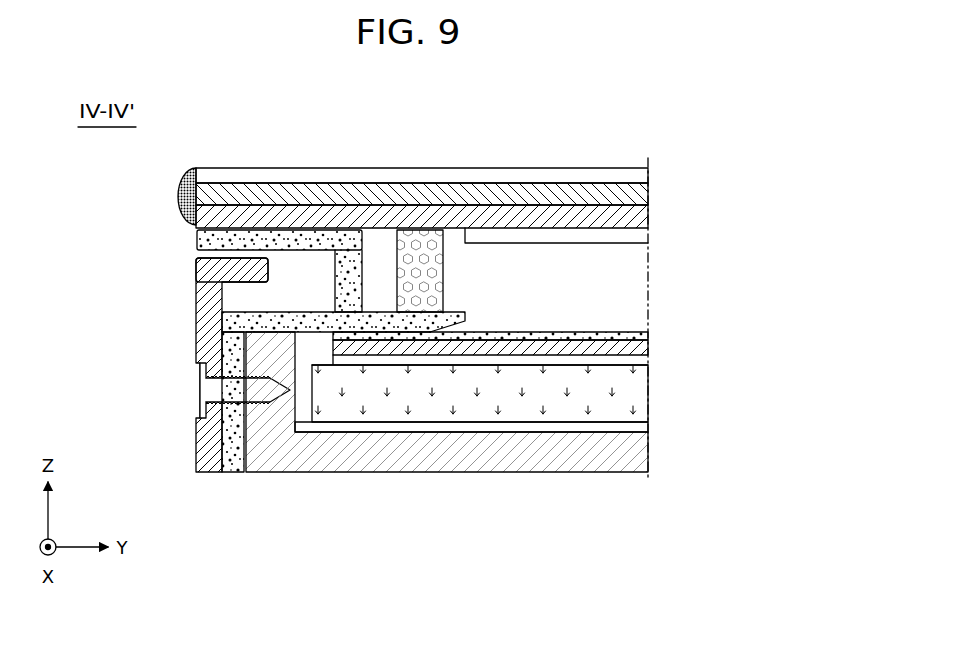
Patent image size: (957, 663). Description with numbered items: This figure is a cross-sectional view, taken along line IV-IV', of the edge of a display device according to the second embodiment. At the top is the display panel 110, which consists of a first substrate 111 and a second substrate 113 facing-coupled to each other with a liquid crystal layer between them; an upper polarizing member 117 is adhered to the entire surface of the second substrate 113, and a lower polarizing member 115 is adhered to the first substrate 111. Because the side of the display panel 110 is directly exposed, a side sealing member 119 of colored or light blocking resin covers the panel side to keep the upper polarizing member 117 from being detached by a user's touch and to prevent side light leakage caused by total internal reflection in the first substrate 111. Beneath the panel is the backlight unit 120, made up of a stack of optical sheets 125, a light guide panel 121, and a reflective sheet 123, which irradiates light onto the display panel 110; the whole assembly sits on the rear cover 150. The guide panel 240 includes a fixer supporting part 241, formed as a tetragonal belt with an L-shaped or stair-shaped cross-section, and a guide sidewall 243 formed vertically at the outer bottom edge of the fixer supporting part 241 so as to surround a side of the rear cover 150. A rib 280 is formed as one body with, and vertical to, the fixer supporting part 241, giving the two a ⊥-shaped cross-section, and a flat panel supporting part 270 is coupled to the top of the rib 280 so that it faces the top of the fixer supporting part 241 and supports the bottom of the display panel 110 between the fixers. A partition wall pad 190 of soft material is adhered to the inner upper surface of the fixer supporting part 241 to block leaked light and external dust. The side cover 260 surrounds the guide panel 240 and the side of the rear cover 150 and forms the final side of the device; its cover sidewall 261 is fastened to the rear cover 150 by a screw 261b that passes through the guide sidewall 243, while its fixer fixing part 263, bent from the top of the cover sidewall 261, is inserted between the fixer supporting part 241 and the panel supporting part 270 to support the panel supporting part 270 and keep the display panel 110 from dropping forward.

The display panel 110 is at (493, 202).
The upper polarizing member 117 is at (646, 174).
The first substrate 111 is at (646, 200).
The second substrate 113 is at (646, 219).
The lower polarizing member 115 is at (600, 238).
The side sealing member 119 is at (178, 195).
The partition wall pad 190 is at (438, 273).
The side cover 260 is at (159, 365).
The cover sidewall 261 is at (210, 323).
The fixer fixing part 263 is at (236, 281).
The screw 261b is at (205, 388).
The guide panel 240 is at (331, 412).
The guide sidewall 243 is at (245, 439).
The panel supporting part 270 is at (297, 242).
The rib 280 is at (354, 269).
The fixer supporting part 241 is at (403, 325).
The backlight unit 120 is at (542, 385).
The optical sheets 125 is at (646, 337).
The light guide panel 121 is at (646, 395).
The reflective sheet 123 is at (515, 427).
The rear cover 150 is at (640, 466).